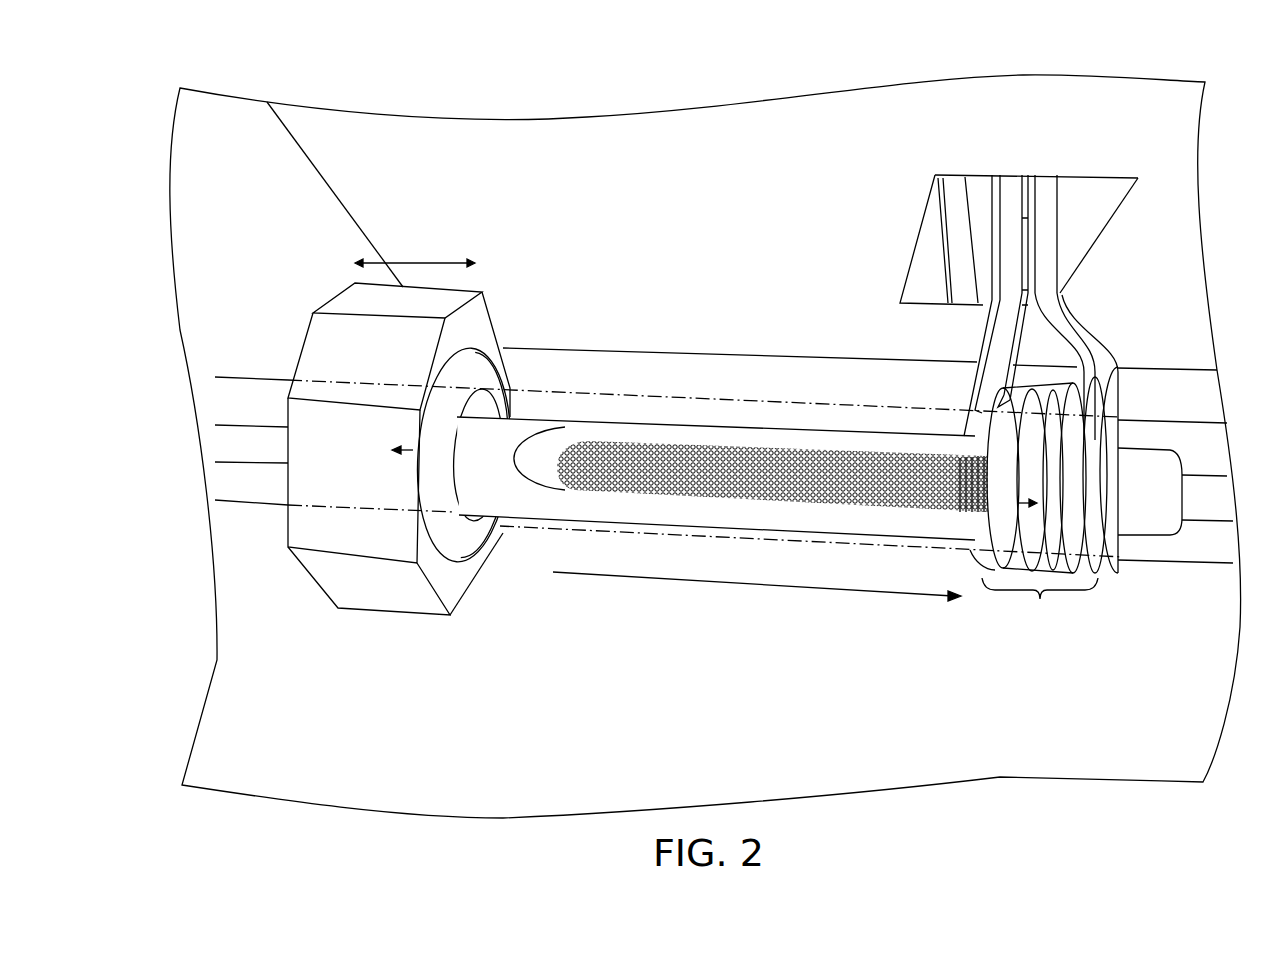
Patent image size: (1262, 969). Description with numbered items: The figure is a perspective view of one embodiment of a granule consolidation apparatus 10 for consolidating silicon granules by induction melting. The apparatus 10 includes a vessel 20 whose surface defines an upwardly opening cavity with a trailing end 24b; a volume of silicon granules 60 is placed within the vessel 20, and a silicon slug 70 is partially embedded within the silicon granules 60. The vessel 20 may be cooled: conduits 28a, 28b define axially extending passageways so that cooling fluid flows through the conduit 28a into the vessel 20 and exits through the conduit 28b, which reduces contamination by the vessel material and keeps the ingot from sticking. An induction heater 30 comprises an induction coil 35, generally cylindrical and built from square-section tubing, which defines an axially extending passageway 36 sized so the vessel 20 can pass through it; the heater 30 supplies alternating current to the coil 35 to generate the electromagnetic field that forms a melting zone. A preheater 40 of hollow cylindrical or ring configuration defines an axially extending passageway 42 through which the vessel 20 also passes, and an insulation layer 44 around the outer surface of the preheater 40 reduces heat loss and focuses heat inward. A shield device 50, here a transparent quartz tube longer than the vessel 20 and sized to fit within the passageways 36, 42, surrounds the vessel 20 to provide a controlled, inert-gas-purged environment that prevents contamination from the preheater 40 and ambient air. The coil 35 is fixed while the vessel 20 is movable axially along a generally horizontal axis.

The granule consolidation apparatus 10 is at (728, 72).
The vessel 20 is at (512, 495).
The trailing end 24b is at (523, 441).
The conduit 28a is at (1197, 522).
The conduit 28b is at (223, 453).
The induction heater 30 is at (1180, 133).
The induction coil 35 is at (1116, 386).
The axially extending passageway 36 is at (1003, 523).
The preheater 40 is at (460, 543).
The axially extending passageway 42 is at (457, 472).
The insulation layer 44 is at (380, 597).
The shield device 50 is at (607, 391).
The silicon granules 60 is at (618, 490).
The silicon slug 70 is at (958, 488).